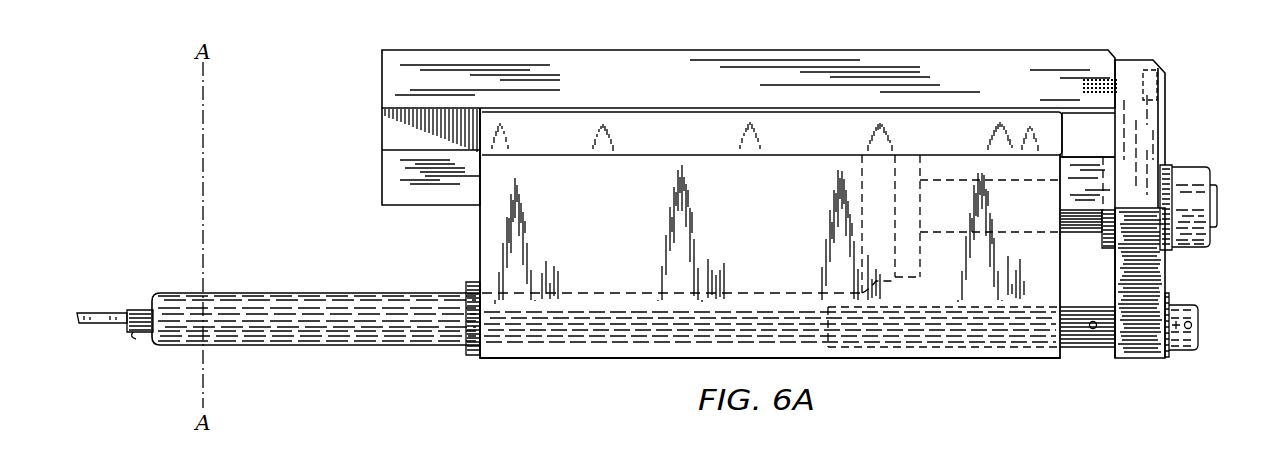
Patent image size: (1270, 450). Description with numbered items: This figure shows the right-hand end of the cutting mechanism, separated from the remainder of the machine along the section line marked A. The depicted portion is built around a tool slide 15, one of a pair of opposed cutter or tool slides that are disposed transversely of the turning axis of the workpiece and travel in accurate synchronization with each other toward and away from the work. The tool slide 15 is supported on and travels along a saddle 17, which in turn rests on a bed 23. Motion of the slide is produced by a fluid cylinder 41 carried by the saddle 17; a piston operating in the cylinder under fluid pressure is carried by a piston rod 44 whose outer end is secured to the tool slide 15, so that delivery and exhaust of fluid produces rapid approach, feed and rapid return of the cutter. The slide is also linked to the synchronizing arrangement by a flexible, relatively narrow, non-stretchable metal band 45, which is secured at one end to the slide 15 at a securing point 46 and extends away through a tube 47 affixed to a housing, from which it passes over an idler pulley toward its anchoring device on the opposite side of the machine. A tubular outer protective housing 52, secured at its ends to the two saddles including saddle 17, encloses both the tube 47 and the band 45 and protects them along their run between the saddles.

The tool slide 15 is at (769, 79).
The saddle 17 is at (647, 358).
The bed 23 is at (971, 313).
The fluid cylinder 41 is at (885, 257).
The piston rod 44 is at (1217, 231).
The band 45 is at (104, 323).
The securing point 46 is at (1190, 332).
The tube 47 is at (137, 337).
The tubular outer protective housing 52 is at (291, 341).